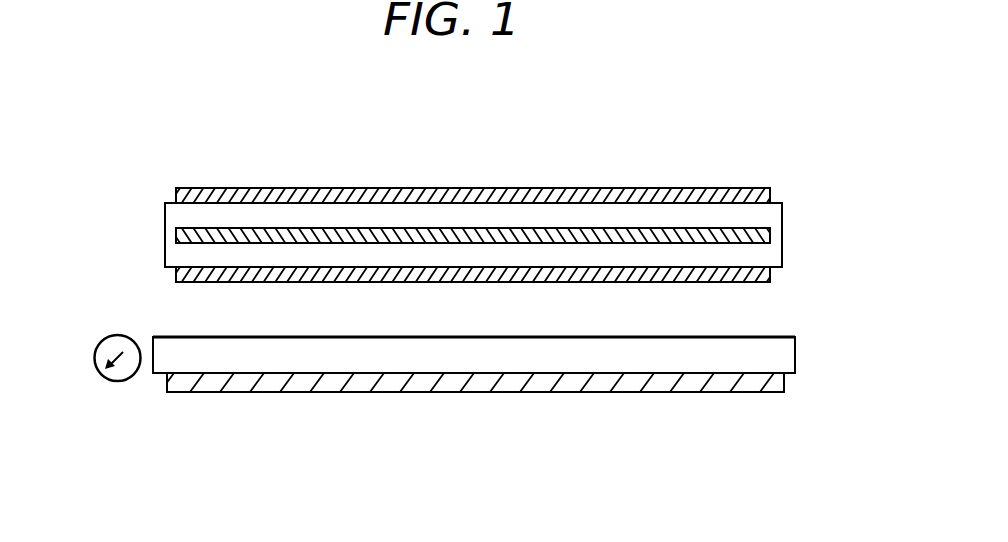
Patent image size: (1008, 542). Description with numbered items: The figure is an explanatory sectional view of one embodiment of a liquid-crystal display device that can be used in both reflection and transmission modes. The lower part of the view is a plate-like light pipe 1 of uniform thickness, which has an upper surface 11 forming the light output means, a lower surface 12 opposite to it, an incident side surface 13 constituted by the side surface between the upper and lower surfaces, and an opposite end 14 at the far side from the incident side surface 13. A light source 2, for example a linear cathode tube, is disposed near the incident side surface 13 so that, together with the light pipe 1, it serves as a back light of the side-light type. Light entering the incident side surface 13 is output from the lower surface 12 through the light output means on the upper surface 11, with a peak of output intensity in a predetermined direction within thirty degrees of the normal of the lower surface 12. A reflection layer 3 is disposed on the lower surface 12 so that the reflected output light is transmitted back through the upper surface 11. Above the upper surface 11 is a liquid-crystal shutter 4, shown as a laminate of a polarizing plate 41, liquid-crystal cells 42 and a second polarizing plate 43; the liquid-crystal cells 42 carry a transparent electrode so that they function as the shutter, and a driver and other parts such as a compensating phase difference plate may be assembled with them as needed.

The light pipe 1 is at (510, 373).
The upper surface 11 is at (567, 338).
The lower surface 12 is at (795, 374).
The incident side surface 13 is at (152, 368).
The opposite end 14 is at (795, 357).
The light source 2 is at (102, 371).
The reflection layer 3 is at (710, 392).
The liquid-crystal shutter 4 is at (530, 231).
The polarizing plate 41 is at (758, 190).
The liquid-crystal cells 42 is at (782, 215).
The polarizing plate 43 is at (518, 305).